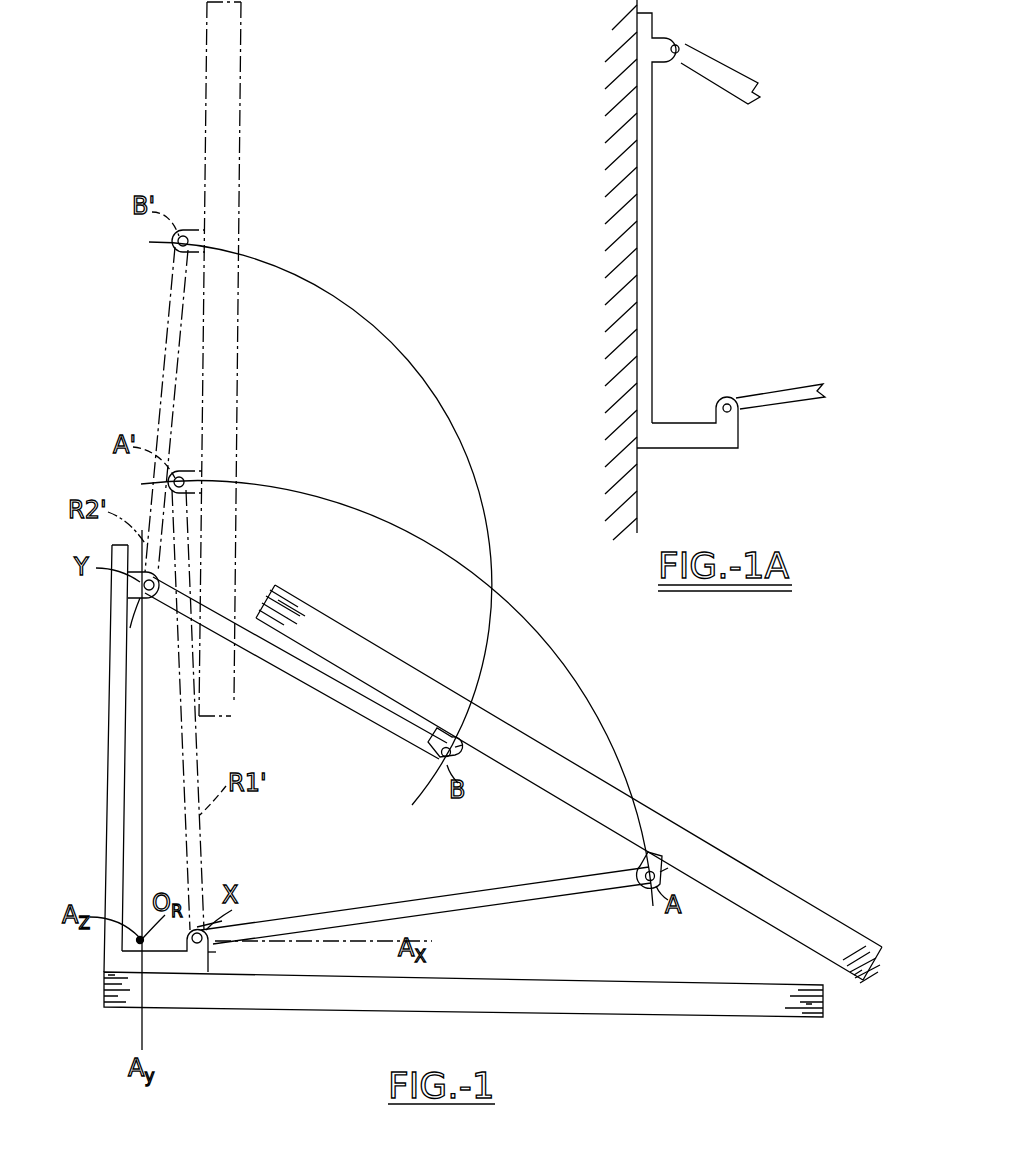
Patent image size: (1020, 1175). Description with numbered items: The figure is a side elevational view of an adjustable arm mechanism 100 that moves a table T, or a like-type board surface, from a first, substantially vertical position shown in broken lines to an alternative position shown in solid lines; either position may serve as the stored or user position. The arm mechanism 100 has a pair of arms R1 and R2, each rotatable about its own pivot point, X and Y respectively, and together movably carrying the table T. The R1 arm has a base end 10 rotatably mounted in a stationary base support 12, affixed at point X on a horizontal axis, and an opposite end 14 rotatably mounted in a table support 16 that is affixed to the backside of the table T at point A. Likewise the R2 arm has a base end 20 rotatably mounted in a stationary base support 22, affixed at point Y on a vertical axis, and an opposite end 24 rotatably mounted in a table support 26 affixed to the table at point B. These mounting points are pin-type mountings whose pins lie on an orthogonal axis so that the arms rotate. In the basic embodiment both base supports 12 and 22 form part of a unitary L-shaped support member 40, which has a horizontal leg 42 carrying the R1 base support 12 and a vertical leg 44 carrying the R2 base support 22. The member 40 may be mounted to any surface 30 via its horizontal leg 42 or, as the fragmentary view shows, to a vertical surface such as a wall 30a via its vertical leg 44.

In FIG. 1, the base end of R1 arm 10 is at (222, 926).
In FIG. 1, the base support 12 is at (216, 952).
In FIG. 1, the opposite end of R1 arm 14 is at (620, 862).
In FIG. 1, the table support 16 is at (665, 878).
In FIG. 1, the base end of R2 arm 20 is at (145, 612).
In FIG. 1, the base support 22 is at (145, 598).
In FIG. 1A, the base support 22 is at (667, 40).
In FIG. 1, the opposite end of R2 arm 24 is at (432, 752).
In FIG. 1, the table support 26 is at (462, 757).
In FIG. 1, the surface 30 is at (548, 975).
In FIG. 1A, the wall 30a is at (638, 490).
In FIG. 1, the L-shaped support member 40 is at (159, 795).
In FIG. 1A, the L-shaped support member 40 is at (687, 252).
In FIG. 1, the horizontal leg 42 is at (178, 962).
In FIG. 1A, the horizontal leg 42 is at (680, 430).
In FIG. 1, the vertical leg 44 is at (108, 745).
In FIG. 1A, the vertical leg 44 is at (655, 200).
In FIG. 1, the arm mechanism 100 is at (506, 645).
In FIG. 1, the R1 arm R1 is at (437, 893).
In FIG. 1A, the R1 arm R1 is at (760, 390).
In FIG. 1, the R2 arm R2 is at (337, 703).
In FIG. 1A, the R2 arm R2 is at (738, 68).
In FIG. 1, the table T is at (295, 590).